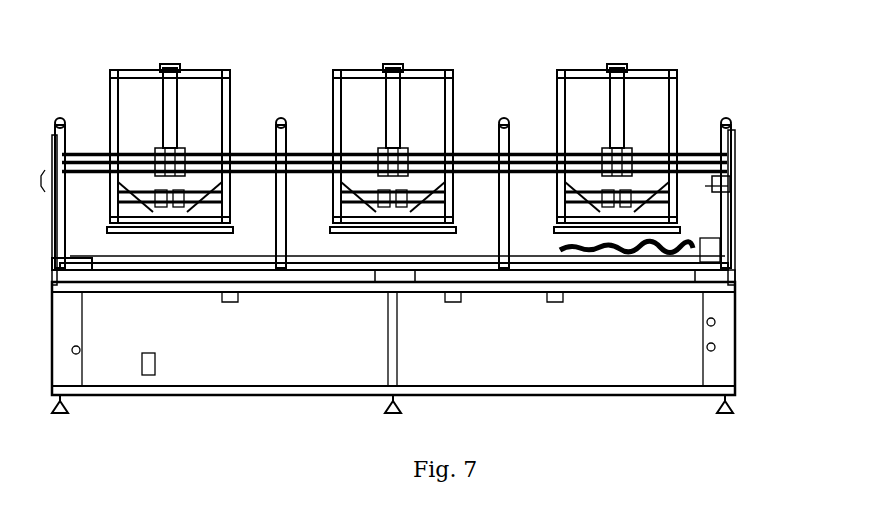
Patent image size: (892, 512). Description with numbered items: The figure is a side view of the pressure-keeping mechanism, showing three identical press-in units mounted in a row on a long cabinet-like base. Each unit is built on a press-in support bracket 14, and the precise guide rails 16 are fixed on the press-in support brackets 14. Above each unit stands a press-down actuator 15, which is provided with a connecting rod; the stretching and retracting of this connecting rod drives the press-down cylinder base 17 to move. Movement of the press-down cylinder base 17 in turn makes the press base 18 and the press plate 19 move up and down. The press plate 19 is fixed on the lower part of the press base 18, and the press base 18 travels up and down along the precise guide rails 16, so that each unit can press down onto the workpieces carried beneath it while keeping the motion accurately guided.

The press-in support bracket 14 is at (307, 153).
The press-down actuator 15 is at (610, 80).
The precise guide rail 16 is at (677, 87).
The press-down cylinder base 17 is at (630, 148).
The press base 18 is at (717, 187).
The press plate 19 is at (670, 232).